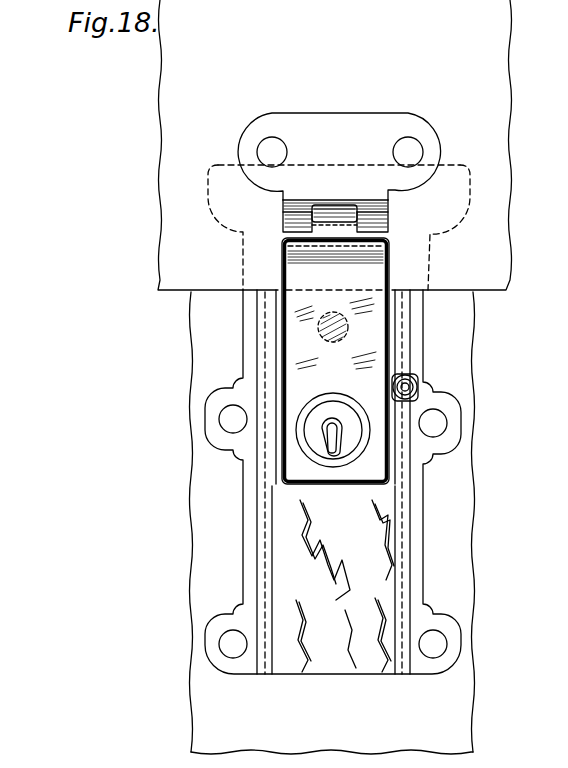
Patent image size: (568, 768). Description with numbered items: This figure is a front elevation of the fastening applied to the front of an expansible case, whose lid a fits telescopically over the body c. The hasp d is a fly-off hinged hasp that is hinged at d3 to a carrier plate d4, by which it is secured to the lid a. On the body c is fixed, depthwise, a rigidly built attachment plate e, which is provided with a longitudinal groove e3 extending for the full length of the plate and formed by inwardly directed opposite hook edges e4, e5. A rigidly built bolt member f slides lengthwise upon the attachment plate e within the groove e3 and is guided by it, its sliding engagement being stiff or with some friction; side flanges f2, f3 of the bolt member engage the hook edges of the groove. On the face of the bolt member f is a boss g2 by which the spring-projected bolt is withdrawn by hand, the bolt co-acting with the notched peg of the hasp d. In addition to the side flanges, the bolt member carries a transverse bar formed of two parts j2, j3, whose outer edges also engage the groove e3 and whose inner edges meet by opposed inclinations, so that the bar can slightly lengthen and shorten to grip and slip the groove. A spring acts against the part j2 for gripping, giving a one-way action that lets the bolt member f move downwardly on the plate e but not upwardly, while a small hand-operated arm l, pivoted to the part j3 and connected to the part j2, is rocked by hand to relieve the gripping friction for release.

The lid a is at (494, 144).
The body c is at (461, 486).
The carrier plate d4 is at (357, 150).
The hinge d3 is at (323, 217).
The hasp d is at (346, 262).
The bolt member f is at (320, 388).
The side flange f2 is at (267, 321).
The side flange f3 is at (404, 317).
The bar part j2 is at (394, 365).
The bar part j3 is at (280, 385).
The attachment plate e is at (430, 535).
The longitudinal groove e3 is at (356, 543).
The hook edge e4 is at (266, 540).
The hook edge e5 is at (396, 586).
The boss g2 is at (392, 391).
The hand-operated arm l is at (418, 387).